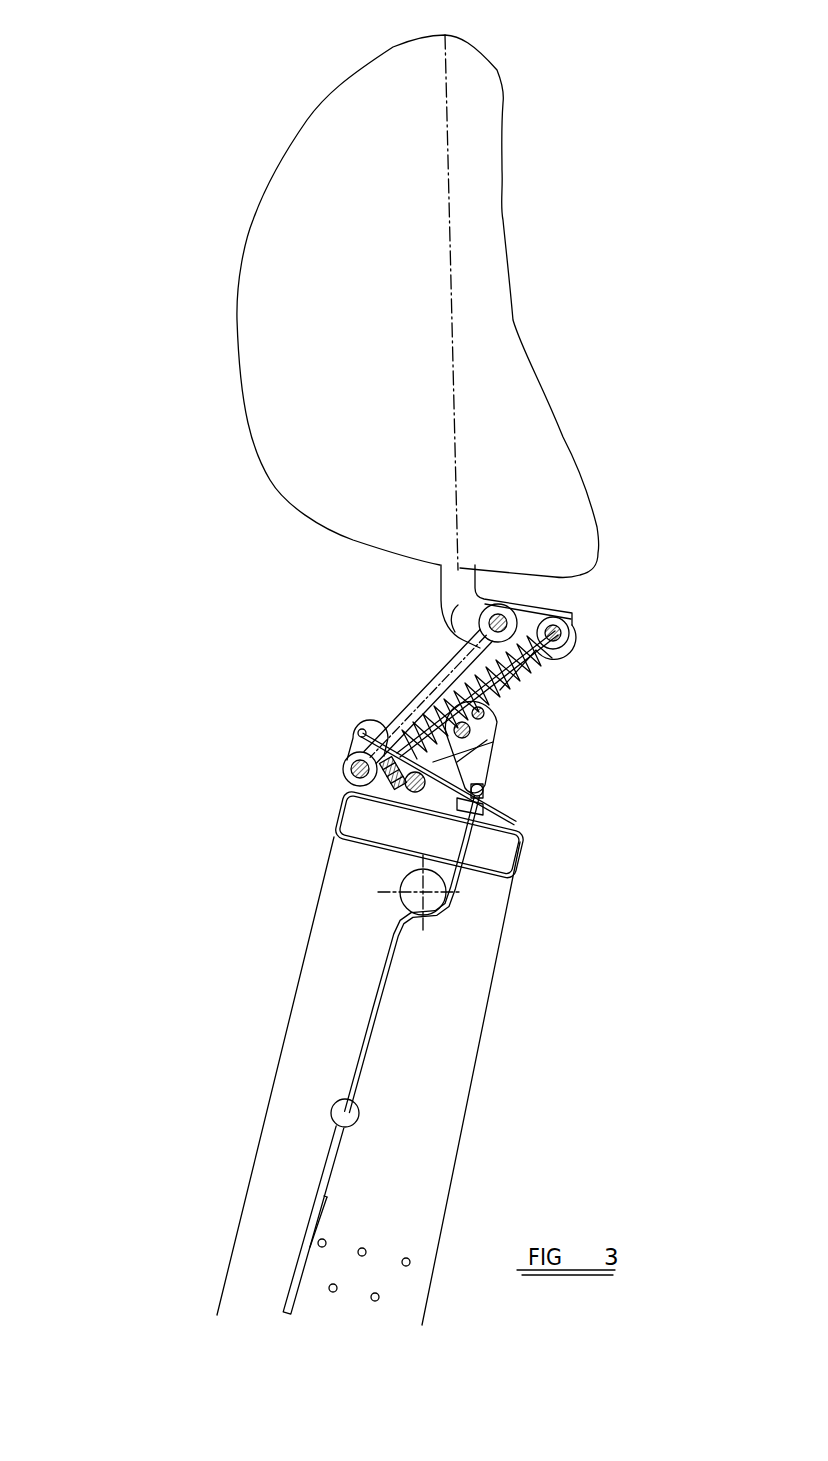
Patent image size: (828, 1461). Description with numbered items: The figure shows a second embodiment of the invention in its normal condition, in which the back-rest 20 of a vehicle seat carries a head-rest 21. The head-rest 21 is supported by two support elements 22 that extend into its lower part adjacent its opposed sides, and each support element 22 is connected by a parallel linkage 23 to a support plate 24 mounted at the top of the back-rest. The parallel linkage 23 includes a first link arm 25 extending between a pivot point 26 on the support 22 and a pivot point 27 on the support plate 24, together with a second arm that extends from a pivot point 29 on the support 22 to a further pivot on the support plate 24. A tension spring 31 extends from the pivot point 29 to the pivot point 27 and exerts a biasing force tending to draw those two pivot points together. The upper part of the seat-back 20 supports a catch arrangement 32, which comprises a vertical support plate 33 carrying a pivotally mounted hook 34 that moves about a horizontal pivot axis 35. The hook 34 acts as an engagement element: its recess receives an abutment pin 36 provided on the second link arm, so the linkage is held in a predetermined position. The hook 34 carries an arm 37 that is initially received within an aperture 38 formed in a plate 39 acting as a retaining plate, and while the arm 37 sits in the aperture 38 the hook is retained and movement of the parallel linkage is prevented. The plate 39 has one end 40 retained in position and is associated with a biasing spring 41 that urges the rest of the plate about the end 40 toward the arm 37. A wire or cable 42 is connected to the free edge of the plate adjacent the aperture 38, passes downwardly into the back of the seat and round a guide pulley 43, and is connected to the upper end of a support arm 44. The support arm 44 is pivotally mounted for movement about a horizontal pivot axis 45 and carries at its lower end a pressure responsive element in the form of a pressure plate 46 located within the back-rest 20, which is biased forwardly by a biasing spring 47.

The back-rest 20 is at (290, 901).
The head-rest 21 is at (220, 370).
The support element 22 is at (448, 591).
The parallel linkage 23 is at (405, 625).
The support plate 24 is at (343, 770).
The first link arm 25 is at (447, 666).
The pivot point 26 is at (510, 602).
The pivot point 27 is at (352, 757).
The pivot point 29 is at (553, 633).
The tension spring 31 is at (540, 670).
The catch arrangement 32 is at (530, 747).
The vertical support plate 33 is at (487, 806).
The hook 34 is at (530, 688).
The horizontal pivot axis 35 is at (498, 730).
The abutment pin 36 is at (500, 764).
The arm 37 is at (490, 775).
The aperture 38 is at (490, 790).
The plate 39 is at (382, 718).
The one end 40 is at (367, 720).
The biasing spring 41 is at (347, 793).
The wire or cable 42 is at (486, 800).
The guide pulley 43 is at (440, 906).
The support arm 44 is at (375, 993).
The horizontal pivot axis 45 is at (333, 1106).
The pressure plate 46 is at (297, 1268).
The biasing spring 47 is at (365, 1247).